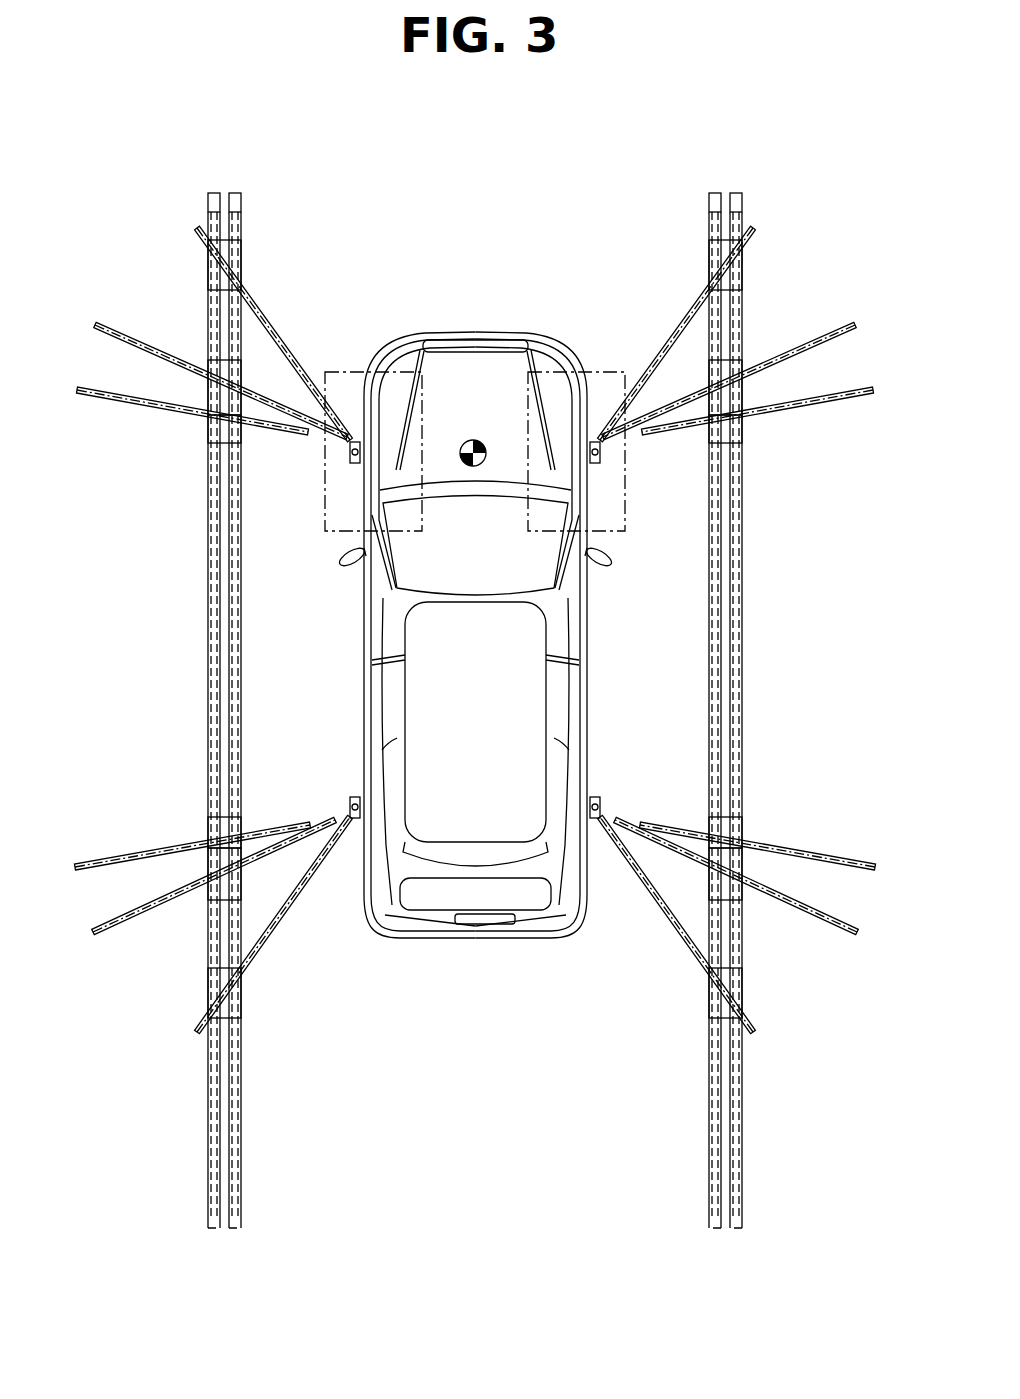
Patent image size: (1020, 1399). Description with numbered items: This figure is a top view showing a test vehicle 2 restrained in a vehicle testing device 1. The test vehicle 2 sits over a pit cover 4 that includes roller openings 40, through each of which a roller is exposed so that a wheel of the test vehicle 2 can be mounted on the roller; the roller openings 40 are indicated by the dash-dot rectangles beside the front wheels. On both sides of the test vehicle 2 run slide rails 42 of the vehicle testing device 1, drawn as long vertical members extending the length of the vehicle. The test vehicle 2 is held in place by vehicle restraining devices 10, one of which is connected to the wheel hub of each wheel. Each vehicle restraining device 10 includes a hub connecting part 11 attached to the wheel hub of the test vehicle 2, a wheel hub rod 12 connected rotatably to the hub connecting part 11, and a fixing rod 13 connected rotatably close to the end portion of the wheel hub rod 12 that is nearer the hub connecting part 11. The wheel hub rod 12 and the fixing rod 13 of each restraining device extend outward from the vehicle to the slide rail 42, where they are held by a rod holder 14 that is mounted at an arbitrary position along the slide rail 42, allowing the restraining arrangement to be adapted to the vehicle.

The vehicle testing device 1 is at (152, 225).
The test vehicle 2 is at (352, 656).
The pit cover 4 is at (652, 1117).
The vehicle restraining device 10 is at (330, 273).
The hub connecting part 11 is at (348, 455).
The wheel hub rod 12 is at (283, 325).
The fixing rod 13 is at (130, 343).
The rod holder 14 is at (210, 268).
The roller opening 40 is at (342, 370).
The slide rail 42 is at (208, 552).